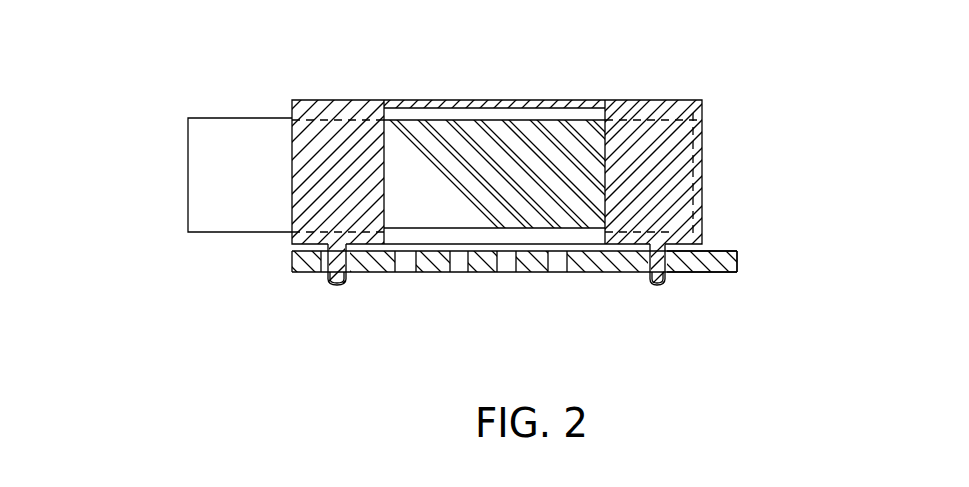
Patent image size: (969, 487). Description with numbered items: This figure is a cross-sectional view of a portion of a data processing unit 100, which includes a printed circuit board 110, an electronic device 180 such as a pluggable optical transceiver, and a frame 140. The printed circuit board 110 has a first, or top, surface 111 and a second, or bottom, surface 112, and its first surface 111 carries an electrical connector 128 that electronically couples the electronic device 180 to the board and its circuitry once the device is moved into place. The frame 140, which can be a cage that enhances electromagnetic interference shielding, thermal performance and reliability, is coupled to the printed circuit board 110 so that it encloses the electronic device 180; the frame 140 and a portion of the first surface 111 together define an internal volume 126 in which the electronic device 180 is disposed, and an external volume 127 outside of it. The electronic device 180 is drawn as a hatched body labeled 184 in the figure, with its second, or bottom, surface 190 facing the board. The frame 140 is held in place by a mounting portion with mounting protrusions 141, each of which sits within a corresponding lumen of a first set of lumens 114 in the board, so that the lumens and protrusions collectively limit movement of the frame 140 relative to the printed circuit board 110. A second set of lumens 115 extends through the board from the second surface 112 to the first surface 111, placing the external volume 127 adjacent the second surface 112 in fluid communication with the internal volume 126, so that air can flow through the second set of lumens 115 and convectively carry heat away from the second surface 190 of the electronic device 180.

The data processing unit 100 is at (185, 49).
The electronic device 180 is at (210, 140).
The frame 140 is at (333, 106).
The electrical connector 128 is at (688, 230).
The internal volume 126 is at (428, 115).
The die / inner body 184 is at (496, 118).
The second surface 190 is at (526, 230).
The external volume 127 is at (421, 380).
The second set of lumens 115 is at (401, 283).
The first set of lumens 114 is at (328, 268).
The mounting protrusions 141 is at (333, 283).
The first surface 111 is at (720, 248).
The printed circuit board 110 is at (725, 262).
The second surface 112 is at (693, 278).